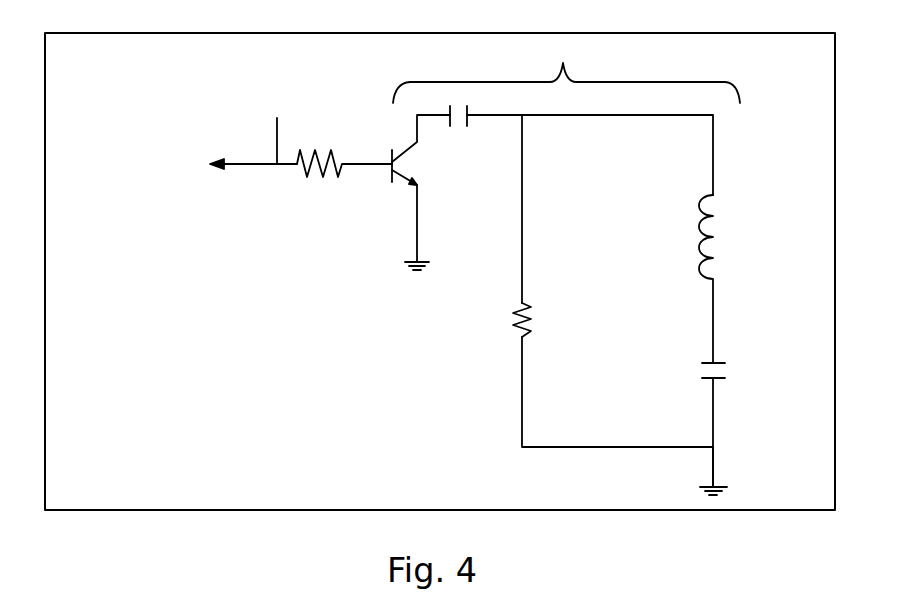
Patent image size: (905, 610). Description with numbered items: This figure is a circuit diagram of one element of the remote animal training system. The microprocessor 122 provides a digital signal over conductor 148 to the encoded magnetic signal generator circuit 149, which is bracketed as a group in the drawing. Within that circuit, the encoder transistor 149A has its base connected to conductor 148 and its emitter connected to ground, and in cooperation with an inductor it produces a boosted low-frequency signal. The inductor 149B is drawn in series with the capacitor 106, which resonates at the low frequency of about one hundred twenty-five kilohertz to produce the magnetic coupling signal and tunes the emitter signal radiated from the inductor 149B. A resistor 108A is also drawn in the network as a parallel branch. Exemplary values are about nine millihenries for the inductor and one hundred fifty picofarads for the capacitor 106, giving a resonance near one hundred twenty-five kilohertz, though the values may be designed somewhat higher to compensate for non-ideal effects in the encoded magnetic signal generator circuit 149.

The microprocessor 122 is at (232, 165).
The conductor 148 is at (260, 163).
The encoded magnetic signal generator circuit 149 is at (566, 262).
The encoder transistor 149A is at (413, 178).
The inductor 149B is at (698, 252).
The resistor 108A is at (513, 323).
The capacitor 106 is at (698, 372).